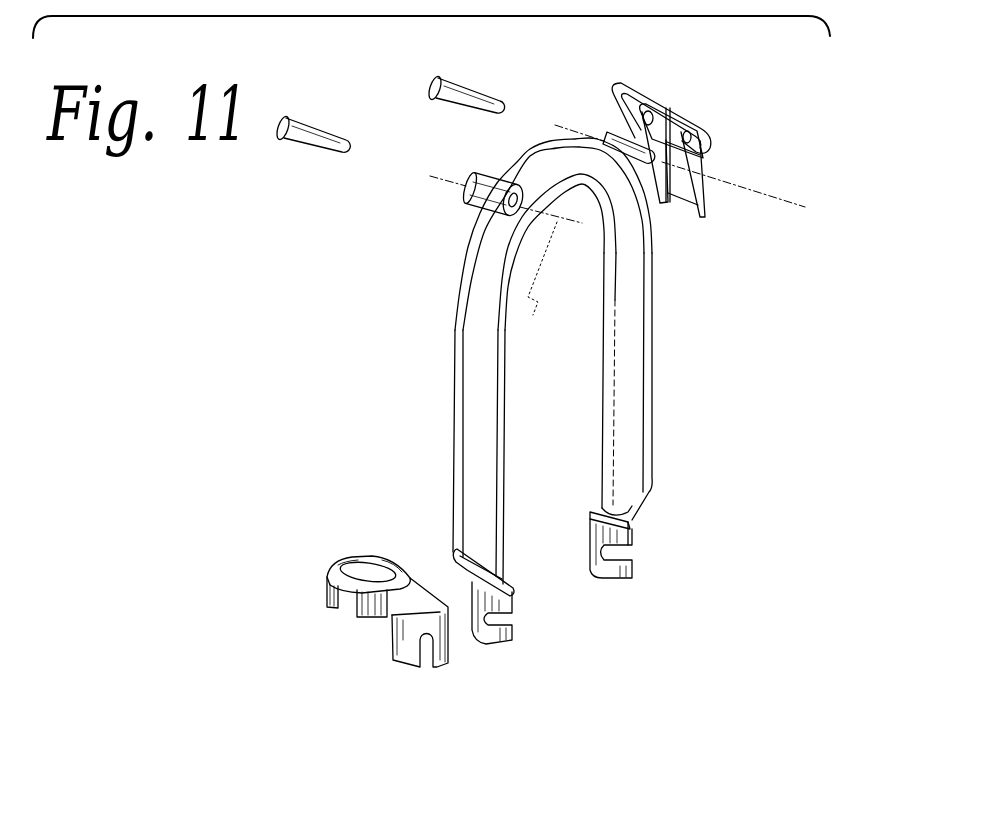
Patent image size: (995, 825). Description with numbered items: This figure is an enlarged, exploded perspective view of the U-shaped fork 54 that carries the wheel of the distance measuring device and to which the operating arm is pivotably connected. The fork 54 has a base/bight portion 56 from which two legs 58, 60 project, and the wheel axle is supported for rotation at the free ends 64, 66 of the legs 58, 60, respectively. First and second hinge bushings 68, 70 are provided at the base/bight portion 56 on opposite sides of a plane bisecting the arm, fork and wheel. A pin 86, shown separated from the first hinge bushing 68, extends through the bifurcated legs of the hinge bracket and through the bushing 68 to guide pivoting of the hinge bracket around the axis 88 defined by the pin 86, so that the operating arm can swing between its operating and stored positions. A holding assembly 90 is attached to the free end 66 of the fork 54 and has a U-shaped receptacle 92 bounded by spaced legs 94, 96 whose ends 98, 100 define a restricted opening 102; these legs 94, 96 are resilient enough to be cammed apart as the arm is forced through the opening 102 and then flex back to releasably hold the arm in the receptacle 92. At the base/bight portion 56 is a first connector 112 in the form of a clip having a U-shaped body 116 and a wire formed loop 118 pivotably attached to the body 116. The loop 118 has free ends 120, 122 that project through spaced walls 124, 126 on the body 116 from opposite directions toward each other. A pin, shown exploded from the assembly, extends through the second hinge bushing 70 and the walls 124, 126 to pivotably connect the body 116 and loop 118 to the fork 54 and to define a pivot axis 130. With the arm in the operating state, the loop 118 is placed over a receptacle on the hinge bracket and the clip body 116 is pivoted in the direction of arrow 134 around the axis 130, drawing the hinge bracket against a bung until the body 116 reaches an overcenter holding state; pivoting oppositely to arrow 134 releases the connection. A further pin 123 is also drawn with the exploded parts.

The U-shaped fork 54 is at (633, 339).
The base/bight portion 56 is at (535, 150).
The leg 58 is at (632, 433).
The leg 60 is at (470, 426).
The free end 64 is at (620, 583).
The free end 66 is at (512, 637).
The first hinge bushing 68 is at (458, 200).
The second hinge bushing 70 is at (598, 128).
The pin 86 is at (313, 148).
The axis 88 is at (548, 275).
The holding assembly 90 is at (331, 593).
The U-shaped receptacle 92 is at (353, 560).
The leg 94 is at (326, 600).
The leg 96 is at (384, 632).
The end 98 is at (328, 607).
The end 100 is at (355, 618).
The restricted opening 102 is at (327, 597).
The first connector 112 is at (691, 170).
The U-shaped body 116 is at (712, 150).
The wire formed loop 118 is at (645, 86).
The free end 120 is at (655, 118).
The free end 122 is at (688, 225).
The pin 123 is at (470, 108).
The wall 124 is at (648, 180).
The wall 126 is at (701, 205).
The pivot axis 130 is at (750, 195).
The arrow 134 is at (720, 142).